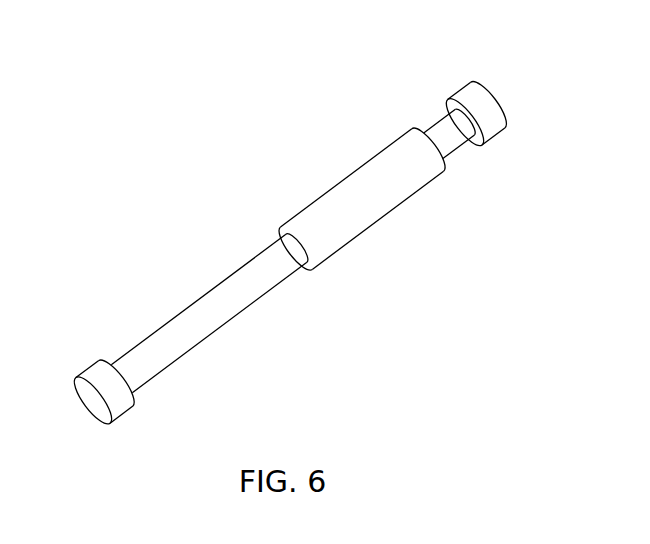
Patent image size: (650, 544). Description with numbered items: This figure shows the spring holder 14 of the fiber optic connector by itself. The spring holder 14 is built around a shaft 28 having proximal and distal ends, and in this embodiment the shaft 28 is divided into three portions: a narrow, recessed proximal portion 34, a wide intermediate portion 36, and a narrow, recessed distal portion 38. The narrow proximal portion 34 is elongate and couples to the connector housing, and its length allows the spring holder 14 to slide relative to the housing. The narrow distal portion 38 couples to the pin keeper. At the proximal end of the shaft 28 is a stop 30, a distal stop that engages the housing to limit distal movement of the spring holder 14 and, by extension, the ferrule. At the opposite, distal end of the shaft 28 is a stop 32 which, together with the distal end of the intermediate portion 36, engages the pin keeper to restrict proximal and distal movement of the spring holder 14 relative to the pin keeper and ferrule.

The spring holder 14 is at (195, 177).
The shaft 28 is at (290, 197).
The stop 30 is at (95, 377).
The stop 32 is at (478, 93).
The narrow proximal portion 34 is at (185, 327).
The wide intermediate portion 36 is at (355, 212).
The narrow distal portion 38 is at (450, 135).